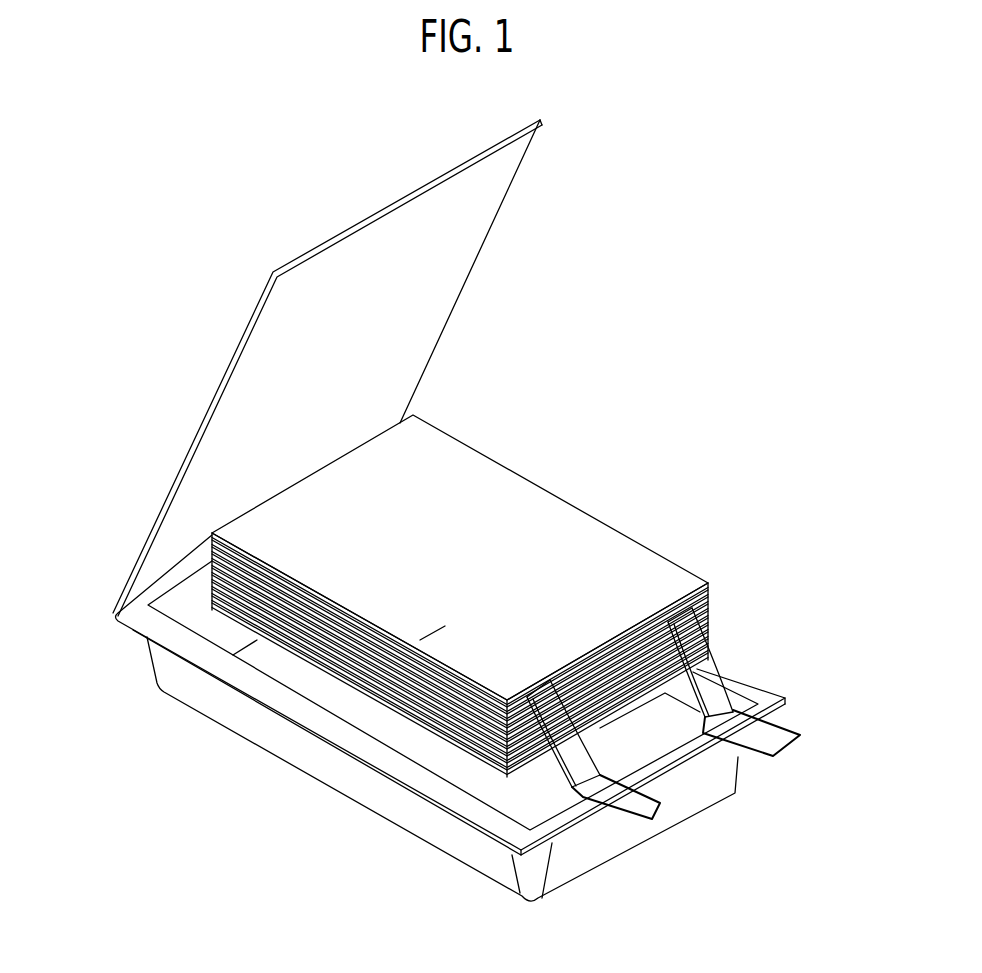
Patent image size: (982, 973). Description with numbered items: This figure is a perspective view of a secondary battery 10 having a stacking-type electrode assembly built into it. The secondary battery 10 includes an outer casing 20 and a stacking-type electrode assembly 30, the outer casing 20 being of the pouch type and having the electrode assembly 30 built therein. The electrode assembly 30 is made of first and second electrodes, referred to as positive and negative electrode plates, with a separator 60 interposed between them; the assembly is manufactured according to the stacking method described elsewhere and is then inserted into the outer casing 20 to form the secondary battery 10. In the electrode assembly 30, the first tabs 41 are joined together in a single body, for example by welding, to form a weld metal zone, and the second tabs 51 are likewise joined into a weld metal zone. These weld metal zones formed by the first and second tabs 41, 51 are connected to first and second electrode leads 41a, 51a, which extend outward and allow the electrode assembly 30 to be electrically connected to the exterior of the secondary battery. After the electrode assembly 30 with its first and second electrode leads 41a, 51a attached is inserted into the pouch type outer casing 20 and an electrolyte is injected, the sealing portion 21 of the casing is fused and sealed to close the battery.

The secondary battery 10 is at (262, 202).
The outer casing 20 is at (136, 684).
The sealing portion 21 is at (150, 623).
The stacking-type electrode assembly 30 is at (580, 444).
The first tab 41 is at (573, 767).
The first electrode lead 41a is at (637, 813).
The second tab 51 is at (710, 667).
The second electrode lead 51a is at (778, 736).
The separator 60 is at (433, 637).